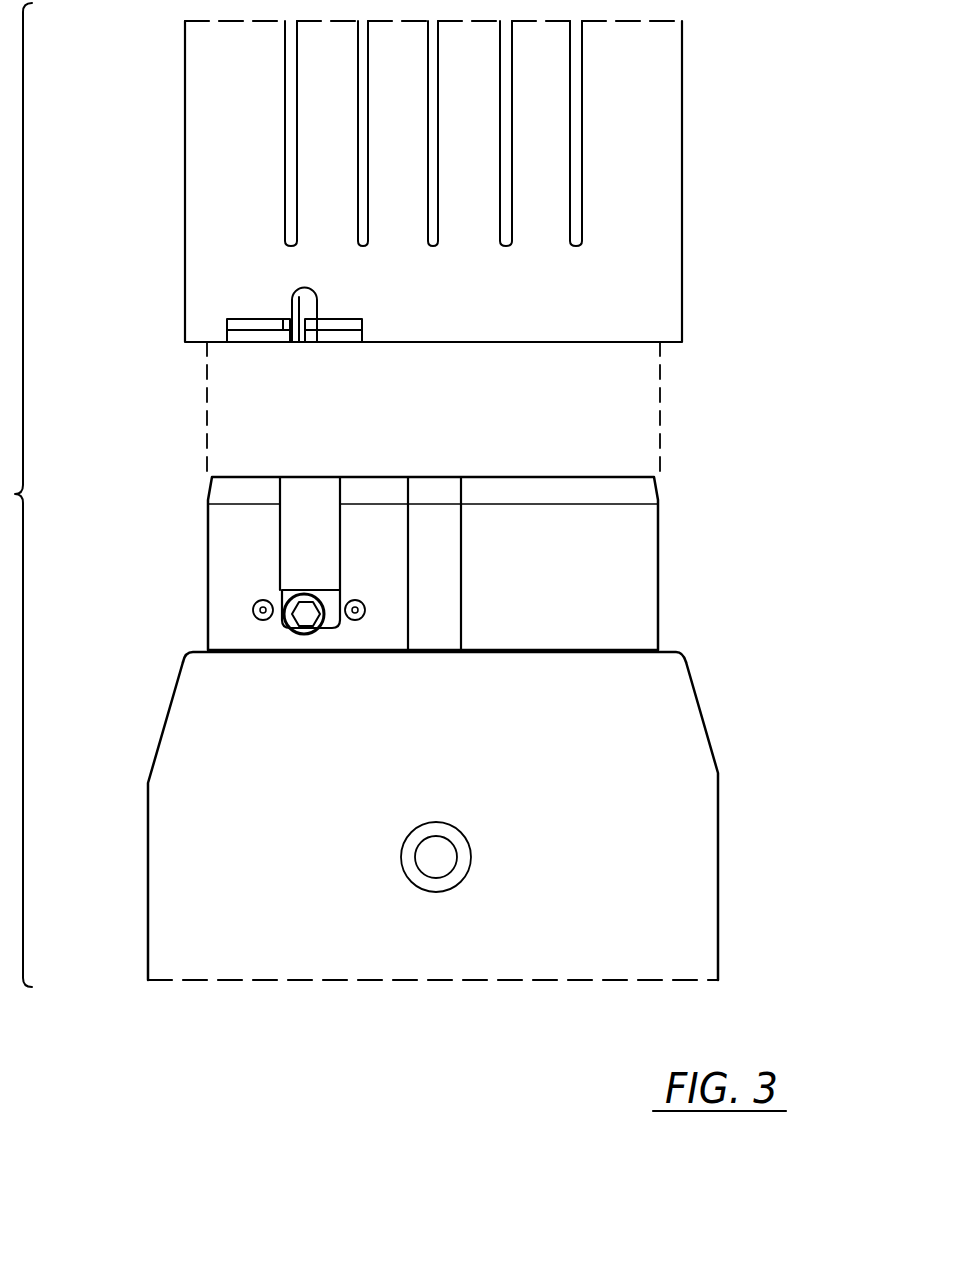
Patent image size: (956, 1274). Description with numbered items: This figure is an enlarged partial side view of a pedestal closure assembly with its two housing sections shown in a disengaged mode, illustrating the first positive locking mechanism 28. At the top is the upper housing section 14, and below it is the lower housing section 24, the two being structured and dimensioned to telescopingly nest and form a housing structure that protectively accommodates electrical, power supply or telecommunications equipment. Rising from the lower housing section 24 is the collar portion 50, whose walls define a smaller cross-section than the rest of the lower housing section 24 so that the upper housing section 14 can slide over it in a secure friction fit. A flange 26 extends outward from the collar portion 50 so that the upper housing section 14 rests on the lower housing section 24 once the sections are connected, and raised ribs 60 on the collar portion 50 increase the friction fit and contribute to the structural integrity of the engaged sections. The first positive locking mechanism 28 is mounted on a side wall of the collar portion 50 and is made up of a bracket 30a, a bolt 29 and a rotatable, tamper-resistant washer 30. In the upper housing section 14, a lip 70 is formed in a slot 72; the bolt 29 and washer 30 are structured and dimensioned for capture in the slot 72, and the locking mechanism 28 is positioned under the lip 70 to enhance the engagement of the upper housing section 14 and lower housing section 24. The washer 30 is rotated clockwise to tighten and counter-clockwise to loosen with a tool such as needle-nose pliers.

The upper housing section 14 is at (655, 175).
The lower housing section 24 is at (672, 777).
The flange 26 is at (670, 648).
The first positive locking mechanism 28 is at (308, 556).
The bolt 29 is at (298, 613).
The tamper-resistant washer 30 is at (283, 600).
The bracket 30a is at (305, 590).
The collar portion 50 is at (637, 542).
The raised ribs 60 is at (438, 528).
The lip 70 is at (247, 332).
The slot 72 is at (303, 302).